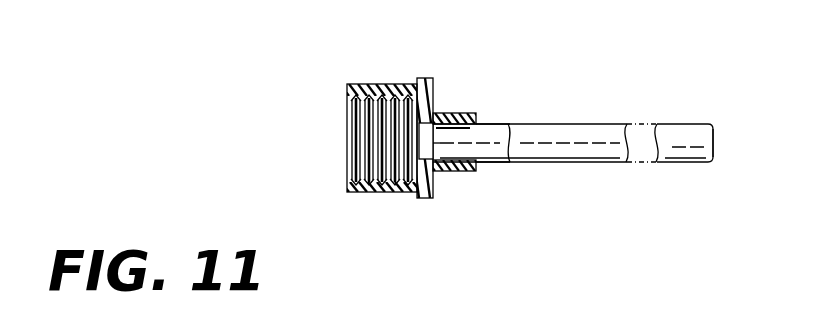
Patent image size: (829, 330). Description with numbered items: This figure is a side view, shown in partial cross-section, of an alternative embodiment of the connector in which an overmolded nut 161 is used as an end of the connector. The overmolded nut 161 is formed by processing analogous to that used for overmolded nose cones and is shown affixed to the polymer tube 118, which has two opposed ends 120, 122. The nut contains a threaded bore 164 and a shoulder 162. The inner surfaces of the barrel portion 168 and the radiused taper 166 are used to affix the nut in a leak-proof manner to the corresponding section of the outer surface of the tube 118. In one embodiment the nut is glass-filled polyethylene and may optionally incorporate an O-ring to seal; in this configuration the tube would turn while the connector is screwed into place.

The polymer tube 118 is at (559, 123).
The end of tube 120 is at (716, 156).
The end of tube 122 is at (423, 152).
The overmolded nut 161 is at (372, 82).
The shoulder 162 is at (429, 78).
The threaded bore 164 is at (352, 128).
The radiused taper 166 is at (484, 119).
The barrel portion 168 is at (459, 113).